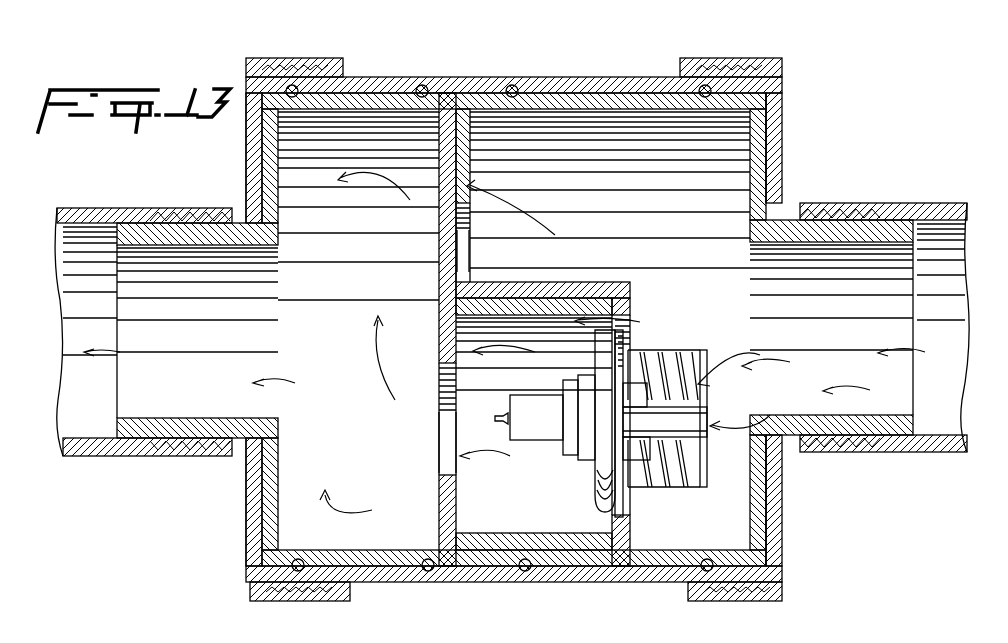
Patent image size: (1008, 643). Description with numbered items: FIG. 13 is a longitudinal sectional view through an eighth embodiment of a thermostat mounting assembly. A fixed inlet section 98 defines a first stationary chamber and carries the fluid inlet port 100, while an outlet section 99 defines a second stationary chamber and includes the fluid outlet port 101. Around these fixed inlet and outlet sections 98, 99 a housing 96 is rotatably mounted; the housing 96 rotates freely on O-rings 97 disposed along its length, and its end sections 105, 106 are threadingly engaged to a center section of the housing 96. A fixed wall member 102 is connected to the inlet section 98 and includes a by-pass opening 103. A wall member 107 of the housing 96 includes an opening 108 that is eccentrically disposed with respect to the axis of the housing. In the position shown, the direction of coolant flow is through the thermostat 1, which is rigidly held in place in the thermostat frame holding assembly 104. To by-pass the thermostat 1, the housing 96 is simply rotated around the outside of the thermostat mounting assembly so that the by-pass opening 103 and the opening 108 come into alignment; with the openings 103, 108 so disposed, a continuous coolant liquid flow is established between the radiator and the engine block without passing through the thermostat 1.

The thermostat 1 is at (716, 380).
The housing 96 is at (604, 76).
The O-rings 97 is at (425, 86).
The fixed inlet section 98 is at (763, 151).
The outlet section 99 is at (256, 186).
The fluid inlet port 100 is at (874, 214).
The fluid outlet port 101 is at (137, 217).
The fixed wall member 102 is at (470, 190).
The by-pass opening 103 is at (478, 271).
The thermostat frame holding assembly 104 is at (628, 283).
The end section 105 is at (735, 72).
The end section 106 is at (303, 66).
The wall member 107 is at (438, 257).
The opening 108 is at (444, 463).